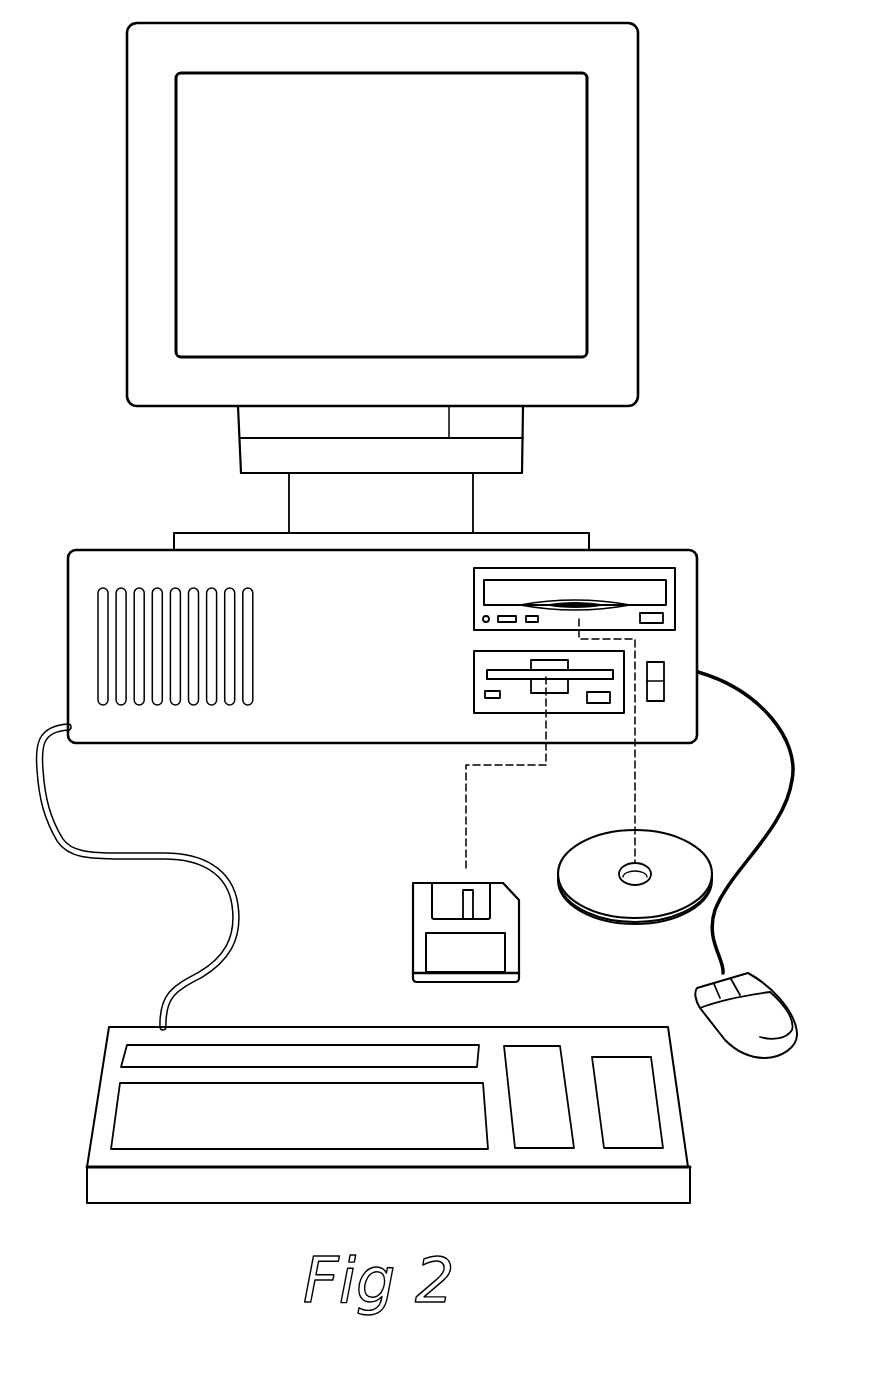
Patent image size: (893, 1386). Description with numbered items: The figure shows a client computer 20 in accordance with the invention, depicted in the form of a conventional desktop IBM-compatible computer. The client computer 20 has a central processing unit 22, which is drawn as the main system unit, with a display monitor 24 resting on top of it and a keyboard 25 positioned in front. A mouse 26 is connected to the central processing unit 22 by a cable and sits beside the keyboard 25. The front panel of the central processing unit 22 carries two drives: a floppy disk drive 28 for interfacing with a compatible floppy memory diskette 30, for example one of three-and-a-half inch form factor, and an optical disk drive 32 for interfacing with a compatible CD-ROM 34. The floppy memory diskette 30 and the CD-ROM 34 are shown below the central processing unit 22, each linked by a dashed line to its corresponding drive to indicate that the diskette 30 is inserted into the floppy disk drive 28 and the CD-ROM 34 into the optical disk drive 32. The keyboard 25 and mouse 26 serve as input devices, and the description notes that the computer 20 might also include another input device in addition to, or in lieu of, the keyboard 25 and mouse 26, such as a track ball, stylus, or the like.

The client computer 20 is at (712, 110).
The central processing unit 22 is at (698, 618).
The display monitor 24 is at (618, 200).
The keyboard 25 is at (687, 1127).
The mouse 26 is at (727, 1018).
The floppy disk drive 28 is at (483, 661).
The floppy memory diskette 30 is at (426, 917).
The optical disk drive 32 is at (490, 585).
The CD-ROM 34 is at (567, 872).